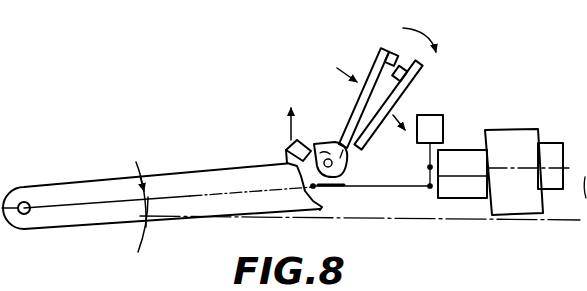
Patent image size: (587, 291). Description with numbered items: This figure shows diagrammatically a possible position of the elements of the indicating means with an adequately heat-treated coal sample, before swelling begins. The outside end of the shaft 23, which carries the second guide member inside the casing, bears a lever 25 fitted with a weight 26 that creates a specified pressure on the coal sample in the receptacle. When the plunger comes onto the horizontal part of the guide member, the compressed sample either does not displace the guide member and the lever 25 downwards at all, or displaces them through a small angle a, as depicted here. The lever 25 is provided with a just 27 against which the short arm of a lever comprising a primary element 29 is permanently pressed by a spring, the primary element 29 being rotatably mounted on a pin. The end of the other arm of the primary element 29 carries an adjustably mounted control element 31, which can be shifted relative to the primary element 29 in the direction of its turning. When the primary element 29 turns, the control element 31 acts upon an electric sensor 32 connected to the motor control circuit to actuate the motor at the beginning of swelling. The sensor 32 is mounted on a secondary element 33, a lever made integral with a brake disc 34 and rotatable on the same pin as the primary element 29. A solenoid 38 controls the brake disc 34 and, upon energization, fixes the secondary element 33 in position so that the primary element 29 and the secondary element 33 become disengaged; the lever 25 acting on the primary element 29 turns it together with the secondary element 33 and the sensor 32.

The shaft 23 is at (25, 186).
The lever 25 is at (185, 180).
The weight 26 is at (515, 137).
The just 27 is at (283, 160).
The primary element 29 is at (369, 69).
The control element 31 is at (394, 54).
The electric sensor 32 is at (418, 62).
The secondary element 33 is at (418, 88).
The brake disc 34 is at (345, 163).
The solenoid 38 is at (443, 122).
The angle α a is at (137, 208).